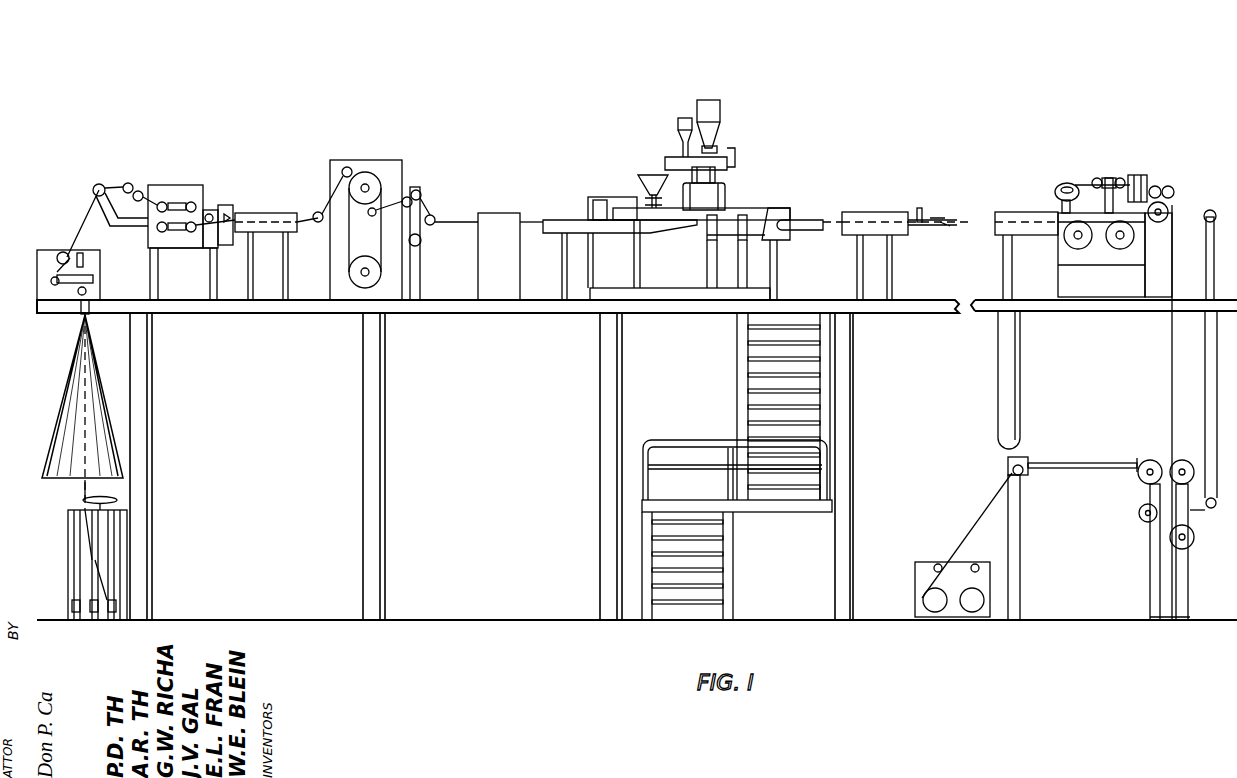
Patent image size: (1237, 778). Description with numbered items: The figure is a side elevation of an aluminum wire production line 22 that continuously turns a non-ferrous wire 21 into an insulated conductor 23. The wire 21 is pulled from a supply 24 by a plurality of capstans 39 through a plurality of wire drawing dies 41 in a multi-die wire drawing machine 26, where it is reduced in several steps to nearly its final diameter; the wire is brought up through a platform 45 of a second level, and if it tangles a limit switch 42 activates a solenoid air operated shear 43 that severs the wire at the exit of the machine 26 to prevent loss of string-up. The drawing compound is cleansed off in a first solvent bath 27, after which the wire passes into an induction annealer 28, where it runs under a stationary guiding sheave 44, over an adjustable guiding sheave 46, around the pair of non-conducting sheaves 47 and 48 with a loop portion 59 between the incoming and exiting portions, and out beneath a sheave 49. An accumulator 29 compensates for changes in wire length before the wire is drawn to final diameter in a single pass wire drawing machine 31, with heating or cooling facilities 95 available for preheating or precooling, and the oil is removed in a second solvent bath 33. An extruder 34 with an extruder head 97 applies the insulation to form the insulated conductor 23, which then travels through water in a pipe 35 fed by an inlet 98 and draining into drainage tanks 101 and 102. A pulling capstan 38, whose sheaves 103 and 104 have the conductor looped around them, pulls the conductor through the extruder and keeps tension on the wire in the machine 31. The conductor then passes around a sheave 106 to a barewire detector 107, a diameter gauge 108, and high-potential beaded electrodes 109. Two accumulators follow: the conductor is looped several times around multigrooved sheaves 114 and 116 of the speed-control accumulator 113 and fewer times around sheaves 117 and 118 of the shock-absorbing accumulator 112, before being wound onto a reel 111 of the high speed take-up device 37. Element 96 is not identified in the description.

The wire 21 is at (75, 412).
The aluminum wire production line 22 is at (541, 64).
The insulated conductor 23 is at (842, 212).
The supply 24 is at (108, 608).
The multi-die wire drawing machine 26 is at (176, 201).
The first solvent bath 27 is at (273, 213).
The induction annealer 28 is at (362, 231).
The accumulator 29 is at (428, 197).
The single pass wire drawing machine 31 is at (500, 211).
The second solvent bath 33 is at (560, 219).
The extruder 34 is at (778, 206).
The pipe 35 is at (945, 220).
The high speed take-up device 37 is at (932, 564).
The pulling capstan 38 is at (1119, 211).
The capstans 39 is at (163, 200).
The wire drawing dies 41 is at (172, 204).
The limit switch 42 is at (85, 265).
The solenoid air operated shear 43 is at (248, 210).
The stationary guiding sheave 44 is at (318, 211).
The platform 45 is at (168, 285).
The adjustable guiding sheave 46 is at (347, 167).
The non-conducting sheave 47 is at (365, 172).
The non-conducting sheave 48 is at (358, 282).
The sheave 49 is at (368, 214).
The loop portion 59 is at (352, 240).
The heating or cooling facilities 95 is at (715, 217).
The post 96 is at (746, 217).
The extruder head 97 is at (806, 220).
The inlet 98 is at (921, 208).
The drainage tank 101 is at (898, 235).
The drainage tank 102 is at (1020, 212).
The sheave 103 is at (1078, 249).
The sheave 104 is at (1120, 249).
The sheave 106 is at (1170, 209).
The barewire detector 107 is at (1072, 182).
The diameter gauge 108 is at (1109, 177).
The high-potential beaded electrodes 109 is at (1136, 185).
The reel 111 is at (922, 598).
The accumulator 112 is at (1188, 572).
The accumulator 113 is at (1148, 537).
The multigrooved sheave 114 is at (1150, 459).
The multigrooved sheave 116 is at (1139, 513).
The sheave 117 is at (1183, 459).
The sheave 118 is at (1192, 530).